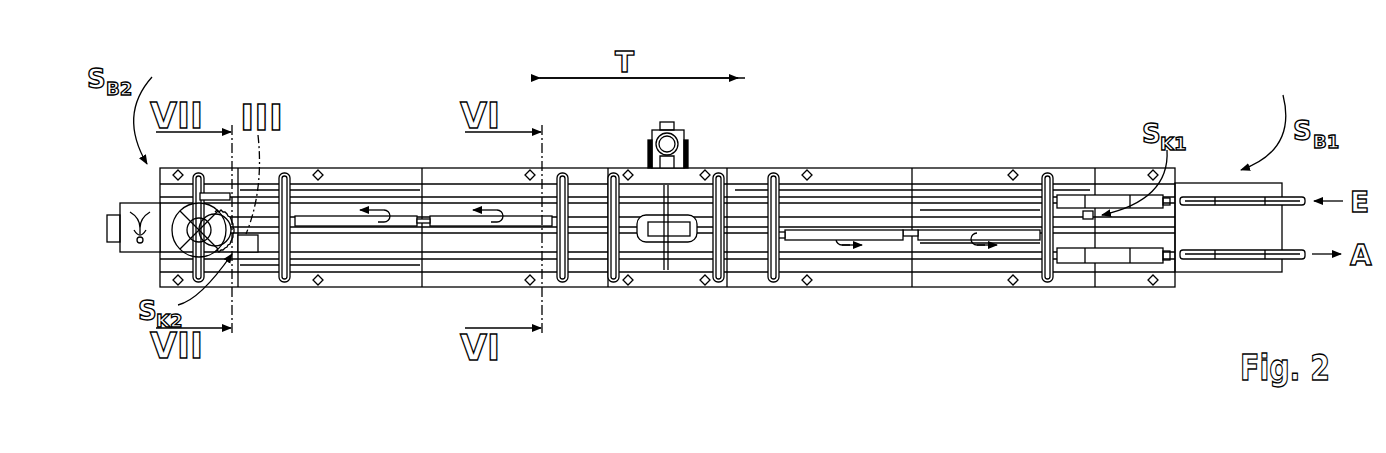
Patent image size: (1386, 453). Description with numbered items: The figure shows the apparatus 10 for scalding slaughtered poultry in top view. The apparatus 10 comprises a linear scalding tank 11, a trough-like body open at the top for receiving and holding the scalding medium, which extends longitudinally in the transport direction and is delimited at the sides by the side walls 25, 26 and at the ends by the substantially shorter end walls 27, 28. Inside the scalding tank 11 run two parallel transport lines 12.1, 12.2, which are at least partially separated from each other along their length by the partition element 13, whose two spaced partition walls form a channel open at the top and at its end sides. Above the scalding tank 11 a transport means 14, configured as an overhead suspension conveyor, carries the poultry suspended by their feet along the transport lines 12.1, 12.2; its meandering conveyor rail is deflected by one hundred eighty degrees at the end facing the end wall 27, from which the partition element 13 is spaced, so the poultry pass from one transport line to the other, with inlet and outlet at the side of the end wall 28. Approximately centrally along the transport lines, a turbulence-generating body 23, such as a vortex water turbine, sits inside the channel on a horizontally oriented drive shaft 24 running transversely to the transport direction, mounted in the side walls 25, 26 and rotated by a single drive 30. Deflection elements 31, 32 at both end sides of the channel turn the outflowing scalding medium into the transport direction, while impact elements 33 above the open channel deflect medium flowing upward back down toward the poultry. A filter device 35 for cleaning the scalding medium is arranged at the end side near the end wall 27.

The apparatus 10 is at (817, 106).
The scalding tank 11 is at (922, 190).
The transport line 12.1 is at (998, 210).
The transport line 12.2 is at (1003, 243).
The partition element 13 is at (794, 213).
The transport means 14 is at (886, 198).
The turbulence-generating body 23 is at (647, 243).
The drive shaft 24 is at (660, 270).
The side wall 25 is at (397, 168).
The side wall 26 is at (377, 288).
The end wall 27 is at (158, 265).
The end wall 28 is at (1177, 240).
The drive 30 is at (652, 148).
The deflection element 31 is at (1088, 211).
The deflection element 32 is at (247, 252).
The impact element 33 is at (342, 216).
The filter device 35 is at (140, 197).